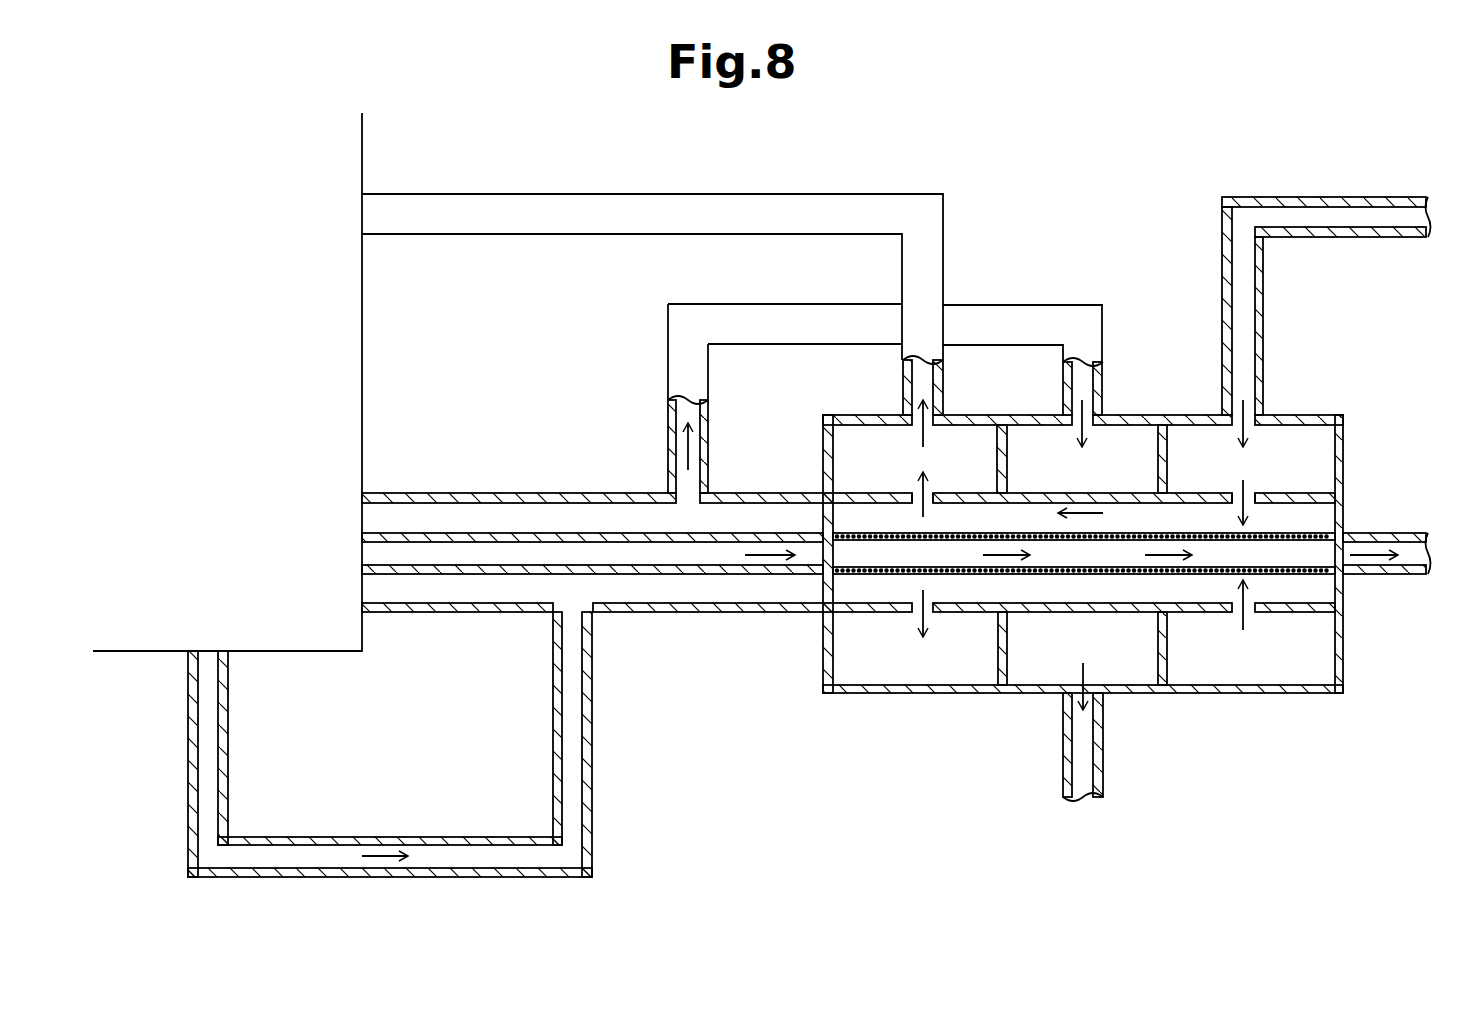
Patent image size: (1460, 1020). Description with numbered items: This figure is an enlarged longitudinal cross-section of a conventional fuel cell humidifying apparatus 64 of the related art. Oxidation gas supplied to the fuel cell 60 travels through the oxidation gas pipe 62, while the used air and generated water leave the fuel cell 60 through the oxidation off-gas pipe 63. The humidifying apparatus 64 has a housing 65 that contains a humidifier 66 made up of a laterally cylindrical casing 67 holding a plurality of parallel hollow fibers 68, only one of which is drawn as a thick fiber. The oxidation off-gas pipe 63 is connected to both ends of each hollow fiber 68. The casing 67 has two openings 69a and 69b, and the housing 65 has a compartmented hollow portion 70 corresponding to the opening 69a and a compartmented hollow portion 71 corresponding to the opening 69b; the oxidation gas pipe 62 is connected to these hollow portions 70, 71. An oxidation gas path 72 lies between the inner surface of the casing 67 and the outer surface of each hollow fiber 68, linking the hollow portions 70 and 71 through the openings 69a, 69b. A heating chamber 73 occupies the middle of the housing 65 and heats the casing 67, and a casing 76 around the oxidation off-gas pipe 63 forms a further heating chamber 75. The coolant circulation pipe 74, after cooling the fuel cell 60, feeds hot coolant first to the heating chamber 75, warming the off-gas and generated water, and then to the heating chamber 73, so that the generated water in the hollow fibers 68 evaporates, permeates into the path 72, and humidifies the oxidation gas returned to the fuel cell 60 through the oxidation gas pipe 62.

The fuel cell 60 is at (362, 417).
The oxidation gas pipe 62 is at (612, 197).
The oxidation off-gas pipe 63 is at (592, 550).
The humidifying apparatus 64 is at (1357, 461).
The housing 65 is at (1184, 415).
The humidifier 66 is at (1104, 486).
The casing 67 is at (1053, 495).
The hollow fiber 68 is at (1050, 577).
The opening 69a is at (1237, 497).
The opening 69b is at (917, 493).
The compartmented hollow portion 70 is at (1303, 445).
The compartmented hollow portion 71 is at (960, 445).
The oxidation gas path 72 is at (989, 522).
The heating chamber 73 is at (1024, 443).
The coolant circulation pipe 74 is at (1003, 305).
The heating chamber 75 is at (665, 605).
The casing 76 is at (527, 493).